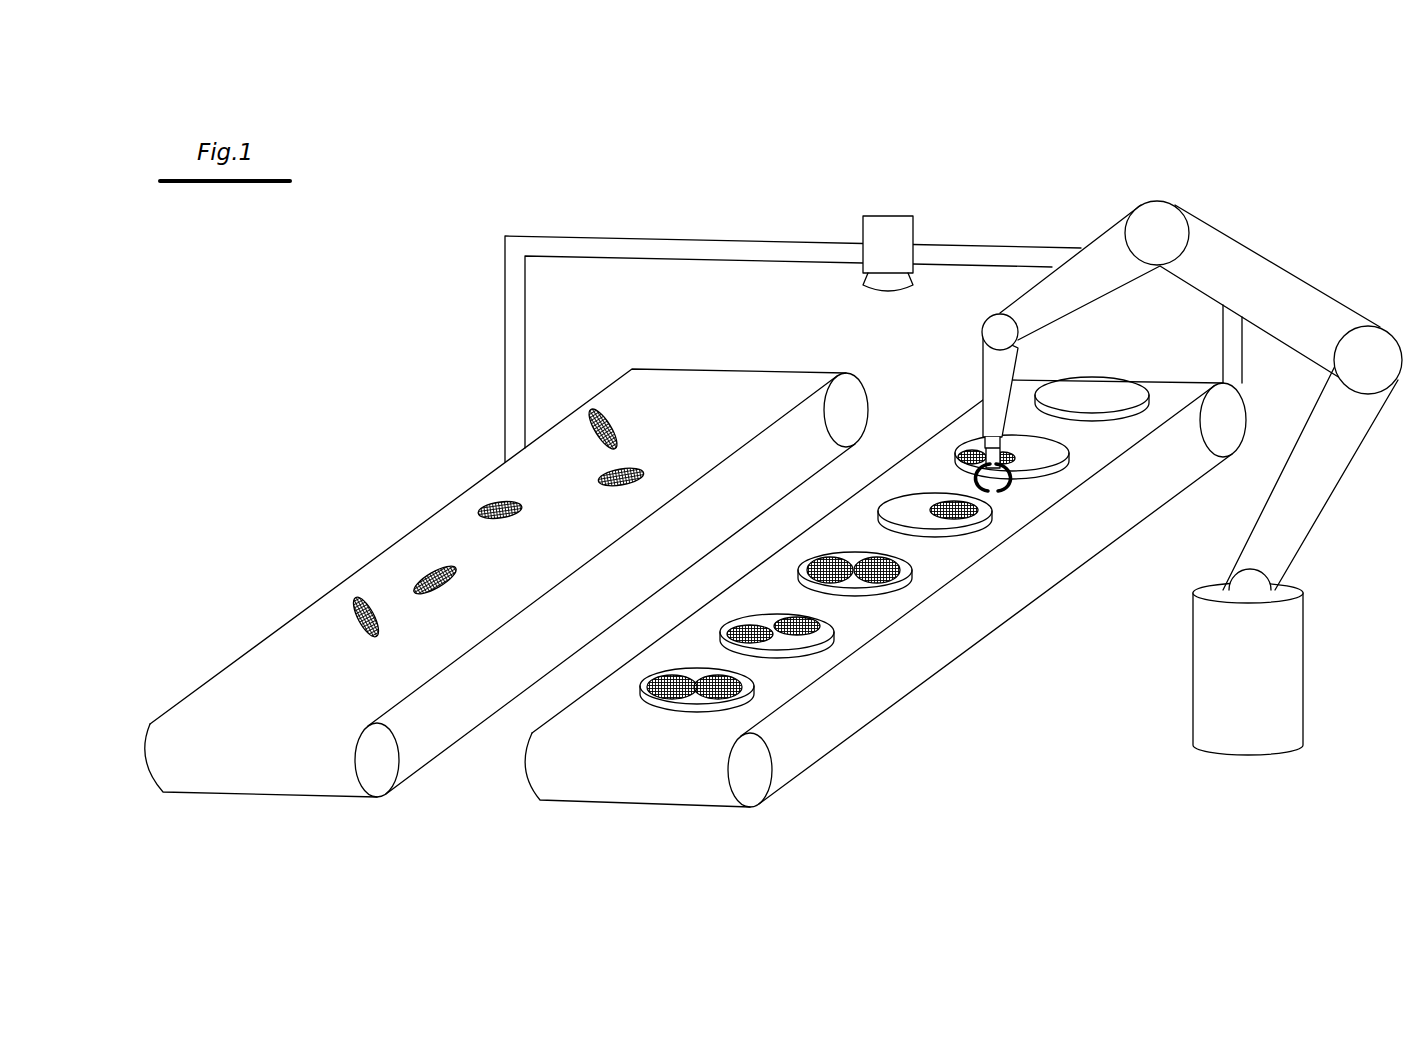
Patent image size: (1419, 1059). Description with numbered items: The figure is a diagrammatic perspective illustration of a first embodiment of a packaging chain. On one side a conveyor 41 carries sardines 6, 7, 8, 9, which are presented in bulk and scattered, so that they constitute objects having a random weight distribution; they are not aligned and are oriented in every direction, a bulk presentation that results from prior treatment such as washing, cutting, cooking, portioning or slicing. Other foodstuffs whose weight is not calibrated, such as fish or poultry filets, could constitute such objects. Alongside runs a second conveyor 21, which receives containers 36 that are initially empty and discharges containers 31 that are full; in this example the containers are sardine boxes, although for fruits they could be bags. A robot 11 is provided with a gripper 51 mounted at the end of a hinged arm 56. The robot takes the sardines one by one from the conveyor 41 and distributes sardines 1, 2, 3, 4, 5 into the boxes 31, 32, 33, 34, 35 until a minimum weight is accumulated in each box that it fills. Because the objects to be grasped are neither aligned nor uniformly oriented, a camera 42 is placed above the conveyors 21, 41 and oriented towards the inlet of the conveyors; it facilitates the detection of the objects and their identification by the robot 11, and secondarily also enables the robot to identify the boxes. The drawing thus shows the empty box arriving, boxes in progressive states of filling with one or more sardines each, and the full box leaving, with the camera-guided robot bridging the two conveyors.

The sardine 1 is at (733, 632).
The sardine 2 is at (960, 450).
The sardine 3 is at (650, 675).
The sardine 4 is at (946, 500).
The sardine 5 is at (855, 608).
The sardine 6 is at (459, 579).
The sardine 7 is at (520, 504).
The sardine 8 is at (626, 469).
The sardine 9 is at (613, 417).
The robot 11 is at (1292, 680).
The conveyor 21 is at (970, 625).
The container 31 is at (753, 693).
The box 32 is at (830, 637).
The box 33 is at (905, 578).
The box 34 is at (990, 520).
The box 35 is at (1067, 458).
The container 36 is at (1097, 383).
The conveyor 41 is at (390, 548).
The camera 42 is at (887, 216).
The gripper 51 is at (968, 442).
The hinged arm 56 is at (1153, 395).